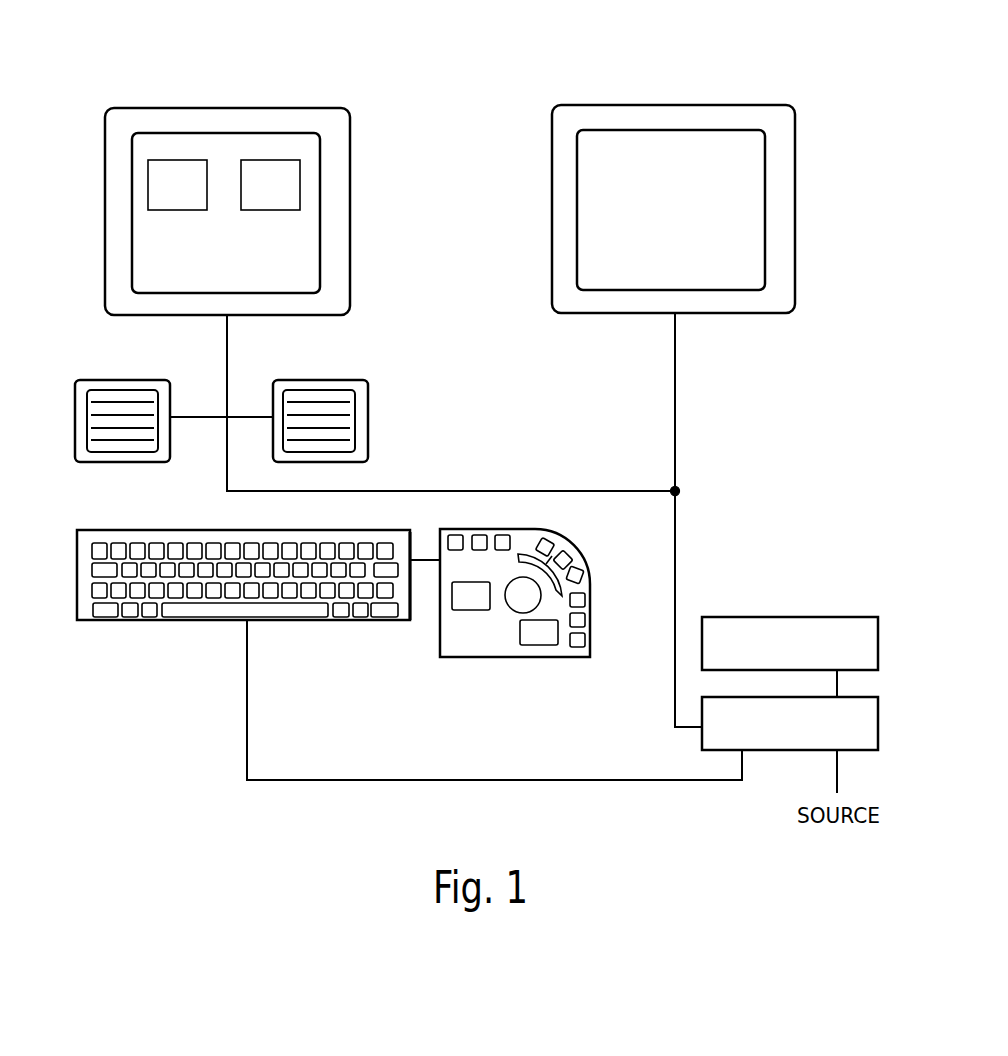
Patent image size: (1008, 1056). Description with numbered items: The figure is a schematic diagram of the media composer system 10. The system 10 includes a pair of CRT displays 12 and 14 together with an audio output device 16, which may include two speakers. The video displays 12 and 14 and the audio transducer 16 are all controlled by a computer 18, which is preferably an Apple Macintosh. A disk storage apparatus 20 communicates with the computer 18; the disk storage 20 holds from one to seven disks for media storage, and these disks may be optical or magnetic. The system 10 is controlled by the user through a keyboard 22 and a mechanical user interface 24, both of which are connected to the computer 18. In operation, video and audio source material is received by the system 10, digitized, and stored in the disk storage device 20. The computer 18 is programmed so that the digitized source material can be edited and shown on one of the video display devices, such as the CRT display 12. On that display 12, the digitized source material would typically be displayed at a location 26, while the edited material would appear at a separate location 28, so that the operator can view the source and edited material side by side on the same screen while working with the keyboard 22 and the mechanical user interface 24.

The media composer system 10 is at (420, 57).
The CRT display 12 is at (258, 107).
The CRT display 14 is at (795, 140).
The audio output device 16 is at (209, 440).
The computer 18 is at (879, 708).
The disk storage apparatus 20 is at (785, 616).
The keyboard 22 is at (103, 621).
The mechanical user interface 24 is at (582, 562).
The location 26 is at (194, 197).
The location 28 is at (290, 194).